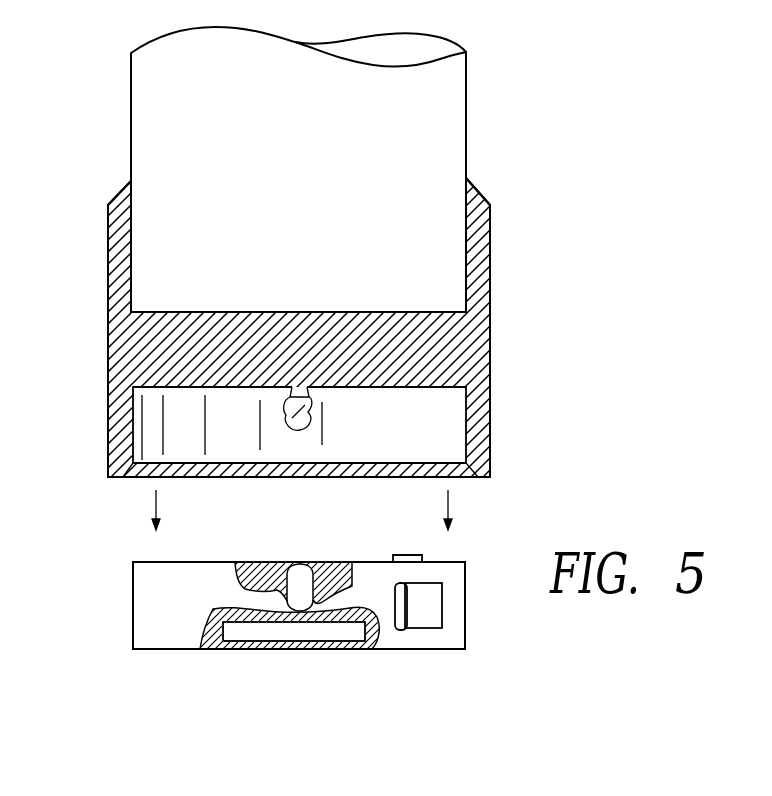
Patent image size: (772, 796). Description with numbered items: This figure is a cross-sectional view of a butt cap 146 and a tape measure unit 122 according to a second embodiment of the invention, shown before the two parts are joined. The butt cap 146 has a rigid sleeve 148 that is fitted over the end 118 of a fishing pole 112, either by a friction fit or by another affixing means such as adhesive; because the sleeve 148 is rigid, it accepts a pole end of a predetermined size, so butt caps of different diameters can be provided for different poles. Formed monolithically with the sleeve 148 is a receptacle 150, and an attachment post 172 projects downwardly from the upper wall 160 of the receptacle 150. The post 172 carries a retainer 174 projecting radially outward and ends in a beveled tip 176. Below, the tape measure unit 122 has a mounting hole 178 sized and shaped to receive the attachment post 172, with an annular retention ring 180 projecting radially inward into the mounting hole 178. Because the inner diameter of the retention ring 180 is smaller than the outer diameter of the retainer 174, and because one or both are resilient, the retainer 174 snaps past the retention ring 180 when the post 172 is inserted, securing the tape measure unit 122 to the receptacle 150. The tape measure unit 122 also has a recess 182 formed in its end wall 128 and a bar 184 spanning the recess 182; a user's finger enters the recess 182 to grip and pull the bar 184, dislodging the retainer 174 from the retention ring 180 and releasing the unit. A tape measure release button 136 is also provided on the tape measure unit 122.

The fishing pole 112 is at (490, 92).
The end 118 is at (178, 251).
The tape measure unit 122 is at (448, 680).
The end wall 128 is at (155, 651).
The tape measure release button 136 is at (405, 555).
The butt cap 146 is at (528, 332).
The rigid sleeve 148 is at (483, 224).
The receptacle 150 is at (492, 429).
The upper wall 160 is at (181, 389).
The attachment post 172 is at (308, 392).
The retainer 174 is at (325, 414).
The beveled tip 176 is at (303, 430).
The mounting hole 178 is at (299, 590).
The annular retention ring 180 is at (300, 562).
The recess 182 is at (350, 628).
The bar 184 is at (305, 649).